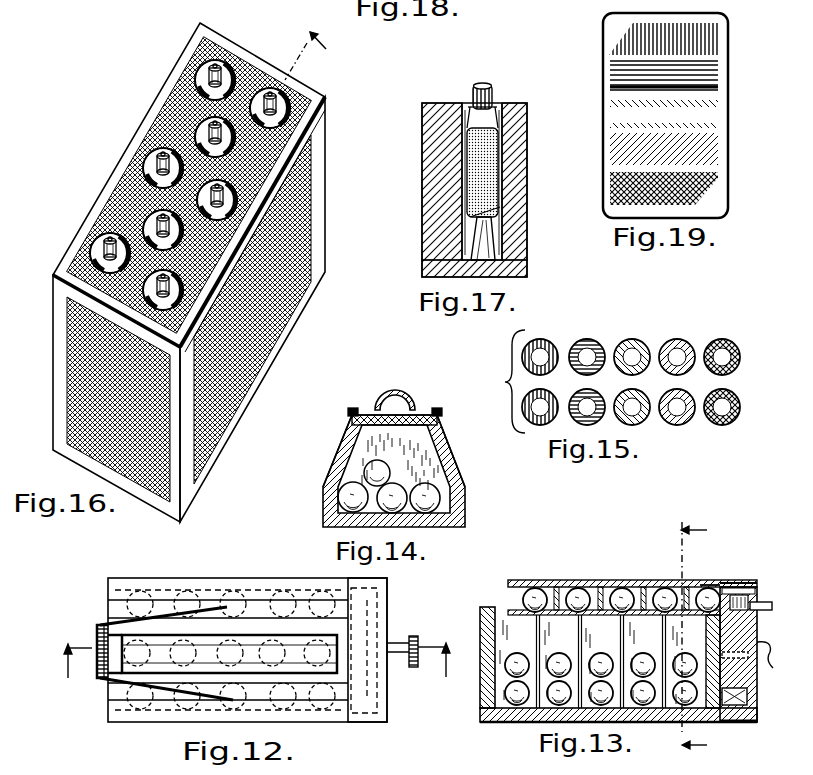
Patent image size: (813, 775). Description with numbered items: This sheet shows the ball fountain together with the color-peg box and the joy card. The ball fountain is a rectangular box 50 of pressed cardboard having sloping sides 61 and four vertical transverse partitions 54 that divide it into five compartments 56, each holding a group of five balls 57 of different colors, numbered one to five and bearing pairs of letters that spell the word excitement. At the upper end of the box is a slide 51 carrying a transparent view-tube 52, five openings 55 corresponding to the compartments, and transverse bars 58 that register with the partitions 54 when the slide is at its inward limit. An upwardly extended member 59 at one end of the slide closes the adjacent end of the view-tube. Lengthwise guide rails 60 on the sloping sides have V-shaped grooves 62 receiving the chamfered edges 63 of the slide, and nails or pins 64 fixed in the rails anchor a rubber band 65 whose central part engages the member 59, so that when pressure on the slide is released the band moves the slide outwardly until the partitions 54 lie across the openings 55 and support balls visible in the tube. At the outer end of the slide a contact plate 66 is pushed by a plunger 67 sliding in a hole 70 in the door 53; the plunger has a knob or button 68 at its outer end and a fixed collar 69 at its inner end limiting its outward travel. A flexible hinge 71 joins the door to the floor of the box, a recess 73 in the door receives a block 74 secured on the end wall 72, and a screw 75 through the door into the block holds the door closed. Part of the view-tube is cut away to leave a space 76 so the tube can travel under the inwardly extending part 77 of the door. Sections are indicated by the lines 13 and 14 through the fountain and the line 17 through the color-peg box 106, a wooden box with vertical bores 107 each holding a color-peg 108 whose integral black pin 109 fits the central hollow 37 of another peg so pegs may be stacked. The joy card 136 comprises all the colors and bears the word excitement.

In FIG. 12, the section line 13— 13 is at (68, 669).
In FIG. 13, the section line 13— 13 is at (446, 670).
In FIG. 13, the section line 14— 14 is at (707, 637).
In FIG. 16, the section line 17— 17 is at (320, 56).
In FIG. 17, the central hollow 37 is at (498, 240).
In FIG. 14, the rectangular box 50 is at (490, 466).
In FIG. 12, the rectangular box 50 is at (114, 665).
In FIG. 14, the slide 51 is at (407, 426).
In FIG. 14, the transparent view-tube 52 is at (397, 392).
In FIG. 12, the transparent view-tube 52 is at (330, 670).
In FIG. 13, the transparent view-tube 52 is at (622, 584).
In FIG. 12, the door 53 is at (367, 650).
In FIG. 13, the door 53 is at (747, 691).
In FIG. 13, the vertical transverse partitions 54 is at (527, 713).
In FIG. 13, the openings 55 is at (486, 640).
In FIG. 13, the compartments 56 is at (597, 661).
In FIG. 15, the balls 57 is at (590, 343).
In FIG. 14, the balls 57 is at (382, 403).
In FIG. 12, the balls 57 is at (143, 578).
In FIG. 13, the balls 57 is at (577, 588).
In FIG. 12, the transverse bars 58 is at (107, 617).
In FIG. 13, the transverse bars 58 is at (508, 612).
In FIG. 12, the upwardly extended member 59 is at (98, 672).
In FIG. 13, the upwardly extended member 59 is at (510, 590).
In FIG. 14, the guide rails 60 is at (350, 418).
In FIG. 12, the guide rails 60 is at (172, 611).
In FIG. 14, the sloping sides 61 is at (340, 466).
In FIG. 14, the V-shaped lengthwise grooves 62 is at (350, 421).
In FIG. 14, the chamfered edges 63 is at (440, 415).
In FIG. 12, the nails or pins 64 is at (227, 607).
In FIG. 12, the rubber band 65 is at (118, 590).
In FIG. 13, the contact plate 66 is at (715, 583).
In FIG. 12, the plunger 67 is at (403, 653).
In FIG. 13, the plunger 67 is at (758, 602).
In FIG. 12, the knob or button 68 is at (417, 650).
In FIG. 13, the fixed collar 69 is at (736, 586).
In FIG. 13, the hole 70 is at (752, 583).
In FIG. 13, the flexible hinge 71 is at (700, 722).
In FIG. 13, the end wall 72 is at (748, 643).
In FIG. 13, the recess 73 is at (737, 723).
In FIG. 13, the block 74 is at (755, 712).
In FIG. 13, the screw 75 is at (773, 666).
In FIG. 13, the space 76 is at (680, 573).
In FIG. 13, the inwardly extending part 77 is at (733, 583).
In FIG. 16, the color-peg box 106 is at (243, 382).
In FIG. 17, the color-peg box 106 is at (440, 236).
In FIG. 16, the vertical bores 107 is at (196, 80).
In FIG. 16, the color-peg 108 is at (292, 88).
In FIG. 17, the color-peg 108 is at (512, 152).
In FIG. 16, the pin 109 is at (145, 163).
In FIG. 17, the pin 109 is at (490, 96).
In FIG. 19, the joy card 136 is at (718, 133).